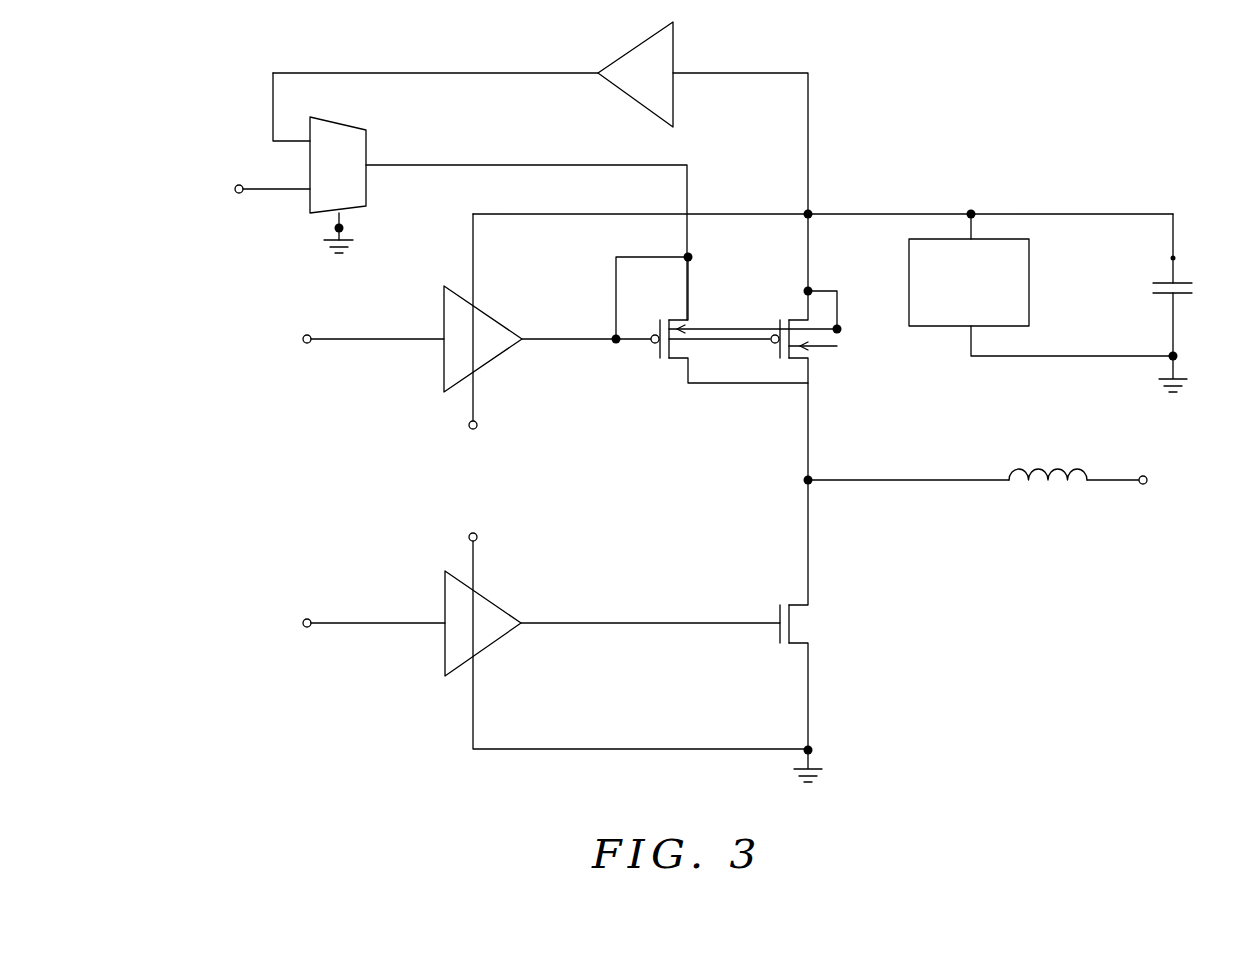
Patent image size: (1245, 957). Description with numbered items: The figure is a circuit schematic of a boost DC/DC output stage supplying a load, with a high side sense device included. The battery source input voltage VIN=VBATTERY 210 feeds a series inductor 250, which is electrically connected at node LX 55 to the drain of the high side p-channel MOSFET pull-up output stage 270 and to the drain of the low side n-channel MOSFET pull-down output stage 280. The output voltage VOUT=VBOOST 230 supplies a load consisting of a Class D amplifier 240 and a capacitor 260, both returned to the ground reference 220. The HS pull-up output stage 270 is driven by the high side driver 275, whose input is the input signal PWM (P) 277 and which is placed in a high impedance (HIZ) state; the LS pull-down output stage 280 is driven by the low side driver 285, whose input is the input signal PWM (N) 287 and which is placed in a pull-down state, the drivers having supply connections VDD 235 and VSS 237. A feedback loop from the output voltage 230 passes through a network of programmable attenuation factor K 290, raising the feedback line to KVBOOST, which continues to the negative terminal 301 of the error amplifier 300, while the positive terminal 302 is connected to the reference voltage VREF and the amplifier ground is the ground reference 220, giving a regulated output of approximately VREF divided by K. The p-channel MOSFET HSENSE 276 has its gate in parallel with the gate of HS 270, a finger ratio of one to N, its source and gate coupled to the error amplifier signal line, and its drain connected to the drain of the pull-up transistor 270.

The node LX 55 is at (803, 480).
The battery source input voltage VIN=VBATTERY 210 is at (1129, 487).
The ground reference 220 is at (1153, 380).
The output voltage VOUT=VBOOST 230 is at (957, 185).
The VDD terminal 235 is at (492, 532).
The VSS terminal 237 is at (493, 427).
The Class D amplifier 240 is at (1030, 249).
The series inductor 250 is at (1034, 489).
The capacitor 260 is at (1182, 302).
The high side p-channel MOSFET pull-up output stage 270 is at (843, 322).
The high side driver 275 is at (508, 322).
The p-channel MOSFET HSENSE 276 is at (675, 312).
The input signal PWM (P) 277 is at (333, 345).
The low side n-channel MOSFET pull-down output stage 280 is at (822, 625).
The low side driver 285 is at (507, 608).
The input signal PWM (N) 287 is at (333, 628).
The network of programmable attenuation factor K 290 is at (675, 28).
The error amplifier 300 is at (337, 122).
The negative terminal 301 is at (238, 127).
The positive terminal 302 is at (240, 199).